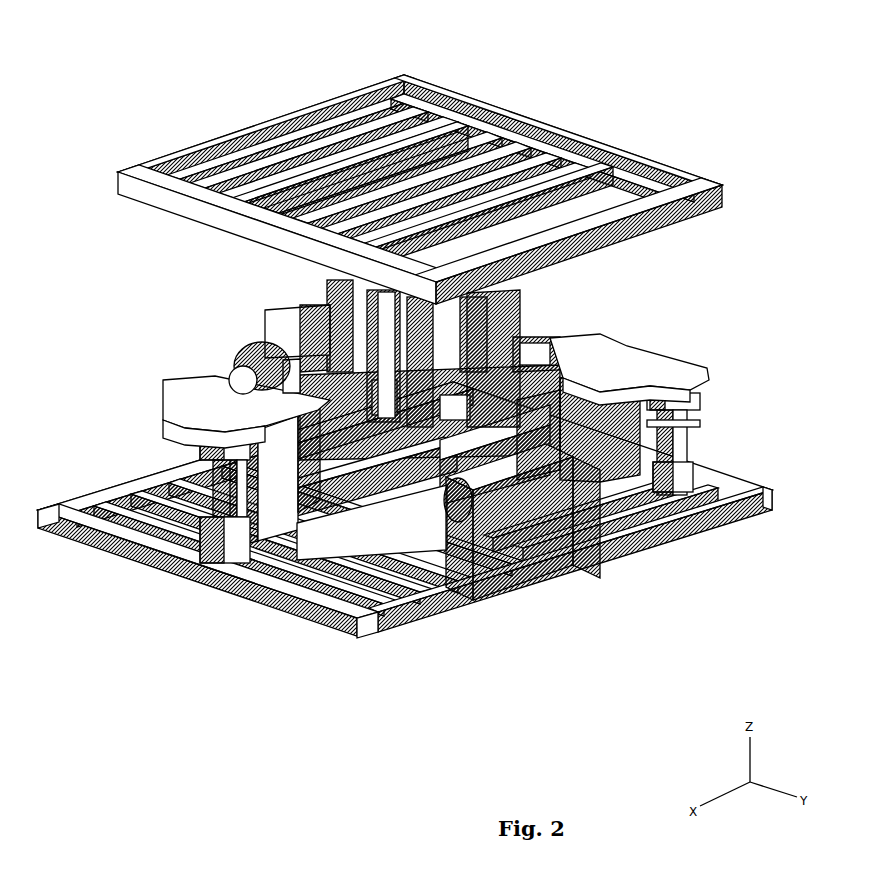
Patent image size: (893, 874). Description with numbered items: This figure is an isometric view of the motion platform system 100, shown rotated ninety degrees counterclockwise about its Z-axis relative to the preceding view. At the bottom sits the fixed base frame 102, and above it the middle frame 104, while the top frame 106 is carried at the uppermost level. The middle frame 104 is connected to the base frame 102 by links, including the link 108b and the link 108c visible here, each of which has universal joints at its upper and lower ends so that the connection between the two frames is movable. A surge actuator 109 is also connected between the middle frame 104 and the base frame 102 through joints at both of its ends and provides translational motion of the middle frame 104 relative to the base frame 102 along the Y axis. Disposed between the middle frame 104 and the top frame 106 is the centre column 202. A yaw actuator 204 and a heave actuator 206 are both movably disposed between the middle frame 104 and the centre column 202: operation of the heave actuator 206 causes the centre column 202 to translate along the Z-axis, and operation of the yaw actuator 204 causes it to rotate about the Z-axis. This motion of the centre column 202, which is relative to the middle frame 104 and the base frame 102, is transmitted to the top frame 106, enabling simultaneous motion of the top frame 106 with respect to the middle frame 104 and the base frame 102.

The motion platform system 100 is at (99, 39).
The base frame 102 is at (606, 582).
The middle frame 104 is at (150, 398).
The top frame 106 is at (633, 140).
The link 108b is at (665, 452).
The link 108c is at (205, 502).
The surge actuator 109 is at (514, 557).
The centre column 202 is at (519, 326).
The yaw actuator 204 is at (240, 370).
The heave actuator 206 is at (338, 342).